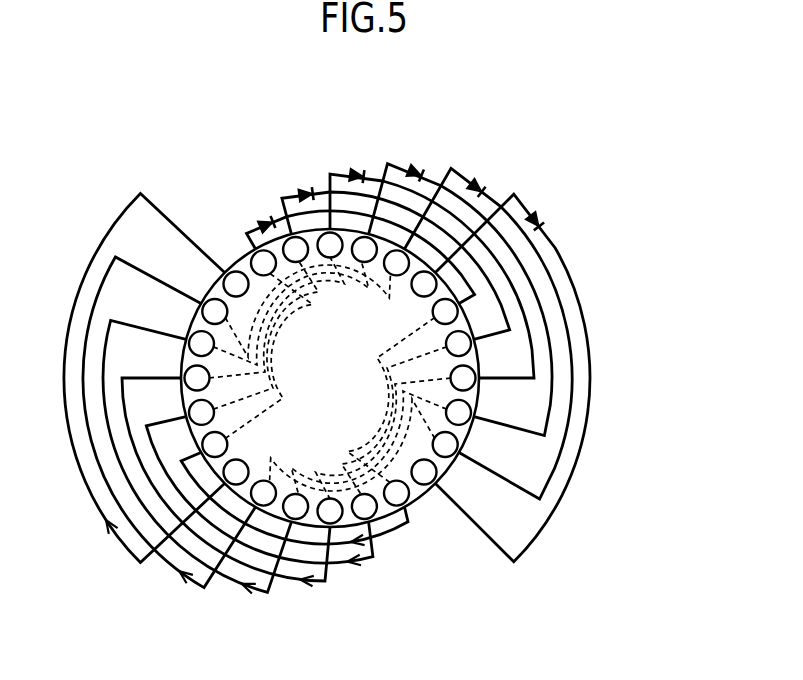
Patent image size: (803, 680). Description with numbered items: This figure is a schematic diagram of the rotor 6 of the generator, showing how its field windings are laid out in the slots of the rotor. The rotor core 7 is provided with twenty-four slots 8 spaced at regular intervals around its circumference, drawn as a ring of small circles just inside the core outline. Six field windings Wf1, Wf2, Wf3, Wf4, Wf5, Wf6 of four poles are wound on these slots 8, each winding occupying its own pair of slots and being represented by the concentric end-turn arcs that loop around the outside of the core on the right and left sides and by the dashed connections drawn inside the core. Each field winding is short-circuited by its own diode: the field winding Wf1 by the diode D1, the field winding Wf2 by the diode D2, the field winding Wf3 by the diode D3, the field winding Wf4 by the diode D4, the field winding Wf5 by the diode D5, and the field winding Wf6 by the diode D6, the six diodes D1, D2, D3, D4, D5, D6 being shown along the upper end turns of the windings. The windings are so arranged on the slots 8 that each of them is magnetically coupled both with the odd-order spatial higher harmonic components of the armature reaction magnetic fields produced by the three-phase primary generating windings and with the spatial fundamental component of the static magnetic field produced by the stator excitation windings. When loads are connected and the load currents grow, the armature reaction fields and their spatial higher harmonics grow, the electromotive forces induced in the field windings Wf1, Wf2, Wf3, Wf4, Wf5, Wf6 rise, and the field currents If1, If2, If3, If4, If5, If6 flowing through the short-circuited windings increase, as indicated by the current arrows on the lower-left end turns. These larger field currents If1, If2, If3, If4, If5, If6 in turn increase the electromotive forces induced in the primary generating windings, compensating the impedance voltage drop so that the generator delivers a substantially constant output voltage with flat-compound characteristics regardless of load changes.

The rotor 6 is at (655, 222).
The rotor core 7 is at (421, 498).
The slots 8 is at (399, 506).
The diode D1 is at (262, 215).
The diode D2 is at (305, 185).
The diode D3 is at (358, 165).
The diode D4 is at (420, 160).
The diode D5 is at (483, 180).
The diode D6 is at (545, 212).
The field winding Wf1 is at (466, 275).
The field winding Wf2 is at (503, 302).
The field winding Wf3 is at (534, 346).
The field winding Wf4 is at (555, 387).
The field winding Wf5 is at (570, 430).
The field winding Wf6 is at (582, 470).
The field current If1 is at (385, 550).
The field current If2 is at (354, 575).
The field current If3 is at (305, 595).
The field current If4 is at (242, 597).
The field current If5 is at (173, 585).
The field current If6 is at (114, 549).